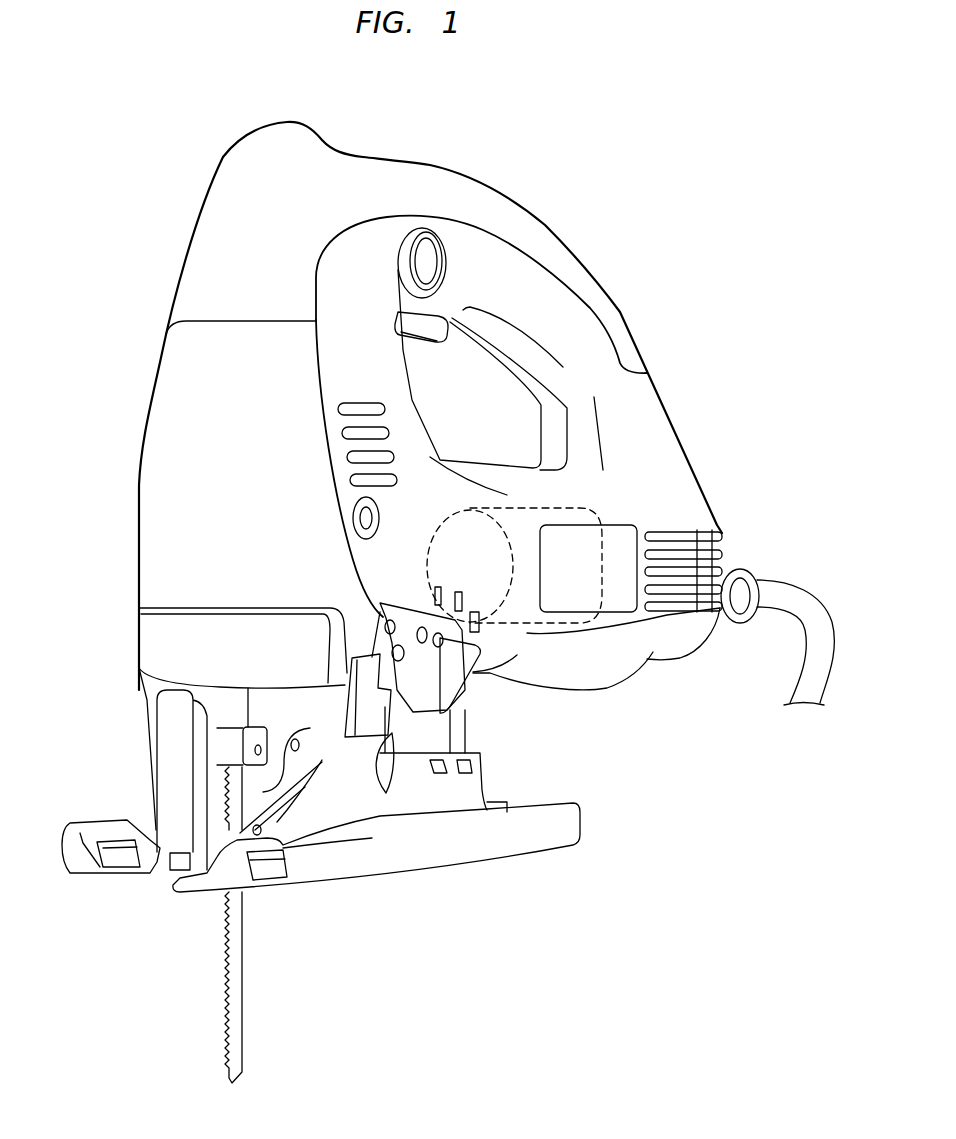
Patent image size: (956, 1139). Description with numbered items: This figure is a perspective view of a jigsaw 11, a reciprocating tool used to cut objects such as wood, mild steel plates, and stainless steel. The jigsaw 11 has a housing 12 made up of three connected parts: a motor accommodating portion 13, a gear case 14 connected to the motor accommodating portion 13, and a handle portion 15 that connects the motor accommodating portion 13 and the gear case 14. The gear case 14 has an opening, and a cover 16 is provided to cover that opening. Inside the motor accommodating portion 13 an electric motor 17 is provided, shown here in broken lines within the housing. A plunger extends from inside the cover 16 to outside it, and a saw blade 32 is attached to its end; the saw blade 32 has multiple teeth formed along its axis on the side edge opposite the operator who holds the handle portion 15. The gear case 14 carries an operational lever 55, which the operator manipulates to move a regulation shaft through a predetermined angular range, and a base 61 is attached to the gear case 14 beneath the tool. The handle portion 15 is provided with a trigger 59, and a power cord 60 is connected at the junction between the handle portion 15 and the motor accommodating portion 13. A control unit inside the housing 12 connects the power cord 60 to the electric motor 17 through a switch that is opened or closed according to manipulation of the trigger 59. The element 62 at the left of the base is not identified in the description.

The jigsaw 11 is at (175, 181).
The housing 12 is at (488, 170).
The motor accommodating portion 13 is at (527, 643).
The gear case 14 is at (397, 393).
The handle portion 15 is at (531, 233).
The cover 16 is at (168, 424).
The electric motor 17 is at (426, 530).
The saw blade 32 is at (235, 1014).
The operational lever 55 is at (462, 680).
The trigger 59 is at (447, 348).
The power cord 60 is at (776, 578).
The base 61 is at (403, 863).
The auxiliary base 62 is at (113, 817).